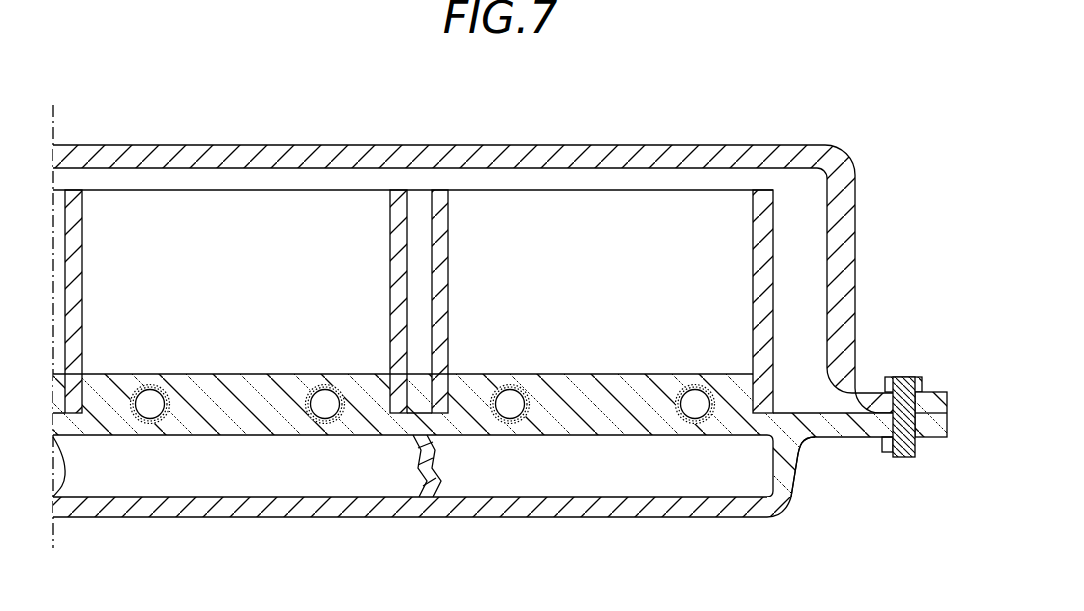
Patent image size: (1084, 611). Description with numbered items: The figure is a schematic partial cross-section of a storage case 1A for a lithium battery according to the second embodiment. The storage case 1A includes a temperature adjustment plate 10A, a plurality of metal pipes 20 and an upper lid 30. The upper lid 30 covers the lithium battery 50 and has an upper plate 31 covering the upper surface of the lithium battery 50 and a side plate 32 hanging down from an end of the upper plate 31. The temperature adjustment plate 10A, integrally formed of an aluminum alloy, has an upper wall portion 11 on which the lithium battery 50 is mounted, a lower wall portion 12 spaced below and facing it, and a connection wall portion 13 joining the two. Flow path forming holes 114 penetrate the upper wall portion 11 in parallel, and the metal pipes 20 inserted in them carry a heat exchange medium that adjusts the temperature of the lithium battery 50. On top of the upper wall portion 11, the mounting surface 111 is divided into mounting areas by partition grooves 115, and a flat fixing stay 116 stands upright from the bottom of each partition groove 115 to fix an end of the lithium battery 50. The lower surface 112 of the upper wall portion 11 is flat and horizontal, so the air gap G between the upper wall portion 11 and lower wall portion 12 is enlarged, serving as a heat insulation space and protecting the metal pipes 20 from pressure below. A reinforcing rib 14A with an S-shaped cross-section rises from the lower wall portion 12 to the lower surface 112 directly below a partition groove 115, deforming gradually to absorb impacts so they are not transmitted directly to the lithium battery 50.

The storage case 1A is at (900, 125).
The upper lid 30 is at (448, 128).
The upper plate 31 is at (576, 154).
The side plate 32 is at (843, 287).
The lithium battery 50 is at (236, 183).
The upper wall portion 11 is at (619, 383).
The fixing stay 116 is at (76, 197).
The partition groove 115 is at (87, 386).
The mounting surface 111 is at (242, 374).
The lower surface 112 is at (195, 437).
The flow path forming hole 114 is at (140, 424).
The metal pipe 20 is at (133, 416).
The reinforcing rib 14A is at (420, 470).
The air gap G is at (331, 489).
The lower wall portion 12 is at (563, 518).
The connection wall portion 13 is at (795, 490).
The temperature adjustment plate 10A is at (815, 474).